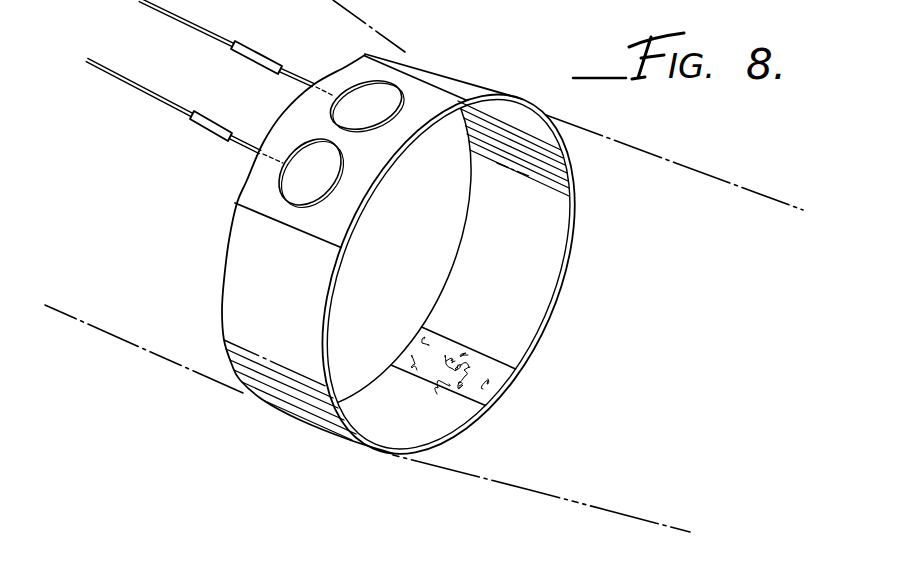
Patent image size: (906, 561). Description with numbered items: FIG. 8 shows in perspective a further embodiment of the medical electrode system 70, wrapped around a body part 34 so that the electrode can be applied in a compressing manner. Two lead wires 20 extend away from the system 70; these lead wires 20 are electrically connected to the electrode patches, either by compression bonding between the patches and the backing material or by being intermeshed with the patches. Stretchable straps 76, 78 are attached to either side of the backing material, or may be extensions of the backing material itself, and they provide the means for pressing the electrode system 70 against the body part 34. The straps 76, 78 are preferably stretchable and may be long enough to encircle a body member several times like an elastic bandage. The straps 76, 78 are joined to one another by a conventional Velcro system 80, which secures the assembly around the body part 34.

The lead wires 20 is at (203, 113).
The body part 34 is at (148, 356).
The medical electrode system 70 is at (440, 50).
The stretchable strap 76 is at (481, 84).
The stretchable strap 78 is at (232, 260).
The Velcro system 80 is at (486, 412).